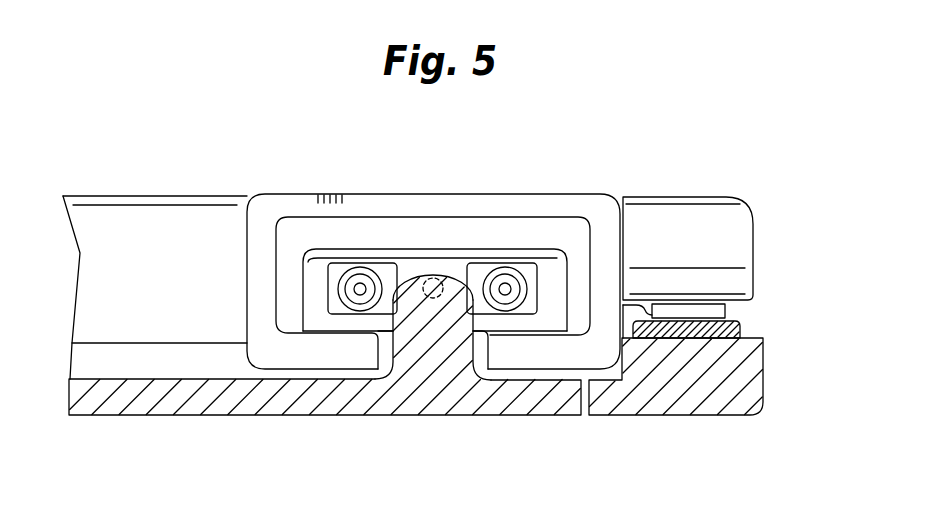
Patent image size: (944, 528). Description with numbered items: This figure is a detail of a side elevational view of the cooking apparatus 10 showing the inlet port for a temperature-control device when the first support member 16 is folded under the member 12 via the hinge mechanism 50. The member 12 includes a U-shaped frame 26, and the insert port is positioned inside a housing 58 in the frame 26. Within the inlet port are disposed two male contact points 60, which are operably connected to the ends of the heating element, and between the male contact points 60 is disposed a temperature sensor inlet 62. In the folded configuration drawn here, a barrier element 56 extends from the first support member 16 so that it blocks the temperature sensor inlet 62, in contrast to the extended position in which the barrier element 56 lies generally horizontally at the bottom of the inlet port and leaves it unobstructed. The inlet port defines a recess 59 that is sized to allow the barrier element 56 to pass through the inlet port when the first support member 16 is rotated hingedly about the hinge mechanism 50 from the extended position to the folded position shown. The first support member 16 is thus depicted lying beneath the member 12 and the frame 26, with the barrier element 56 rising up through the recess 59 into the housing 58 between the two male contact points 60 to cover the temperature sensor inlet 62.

The cooking apparatus 10 is at (643, 97).
The member 12 is at (722, 188).
The first support member 16 is at (223, 400).
The U-shaped frame 26 is at (166, 195).
The hinge mechanism 50 is at (733, 314).
The barrier element 56 is at (428, 365).
The housing 58 is at (300, 194).
The recess 59 is at (480, 347).
The male contact points 60 is at (381, 274).
The temperature sensor inlet 62 is at (437, 280).